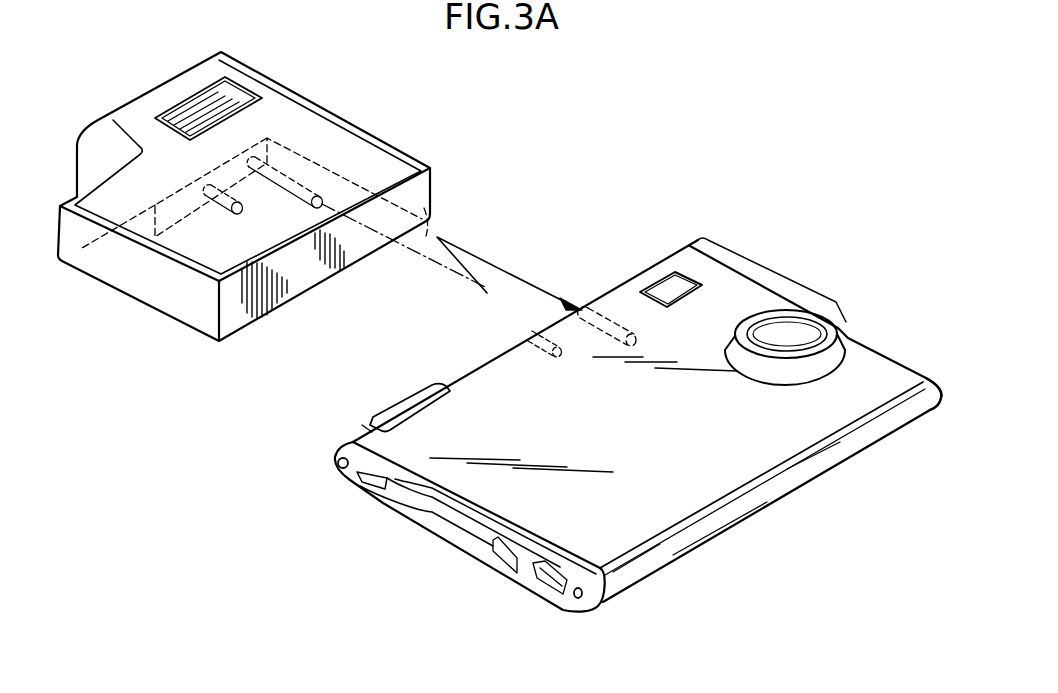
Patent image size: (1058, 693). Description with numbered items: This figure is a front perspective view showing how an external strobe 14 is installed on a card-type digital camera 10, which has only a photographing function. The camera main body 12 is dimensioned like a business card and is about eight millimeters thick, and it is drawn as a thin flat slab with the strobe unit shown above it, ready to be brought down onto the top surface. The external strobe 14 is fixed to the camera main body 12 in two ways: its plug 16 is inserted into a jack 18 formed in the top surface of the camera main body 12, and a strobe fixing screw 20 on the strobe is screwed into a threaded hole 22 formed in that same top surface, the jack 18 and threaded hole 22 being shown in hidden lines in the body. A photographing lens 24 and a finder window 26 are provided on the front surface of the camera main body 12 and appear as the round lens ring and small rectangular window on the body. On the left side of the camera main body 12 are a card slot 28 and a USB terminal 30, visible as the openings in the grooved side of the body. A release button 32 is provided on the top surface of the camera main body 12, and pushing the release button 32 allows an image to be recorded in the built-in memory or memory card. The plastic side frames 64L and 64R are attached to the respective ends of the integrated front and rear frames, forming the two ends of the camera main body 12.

The digital camera 10 is at (772, 142).
The camera main body 12 is at (693, 468).
The external strobe 14 is at (123, 128).
The plug 16 is at (303, 187).
The jack 18 is at (583, 304).
The strobe fixing screw 20 is at (222, 208).
The threaded hole 22 is at (530, 337).
The photographing lens 24 is at (787, 350).
The finder window 26 is at (661, 279).
The card slot 28 is at (417, 498).
The USB terminal 30 is at (557, 589).
The release button 32 is at (412, 405).
The side frame 64L is at (333, 462).
The side frame 64R is at (935, 410).